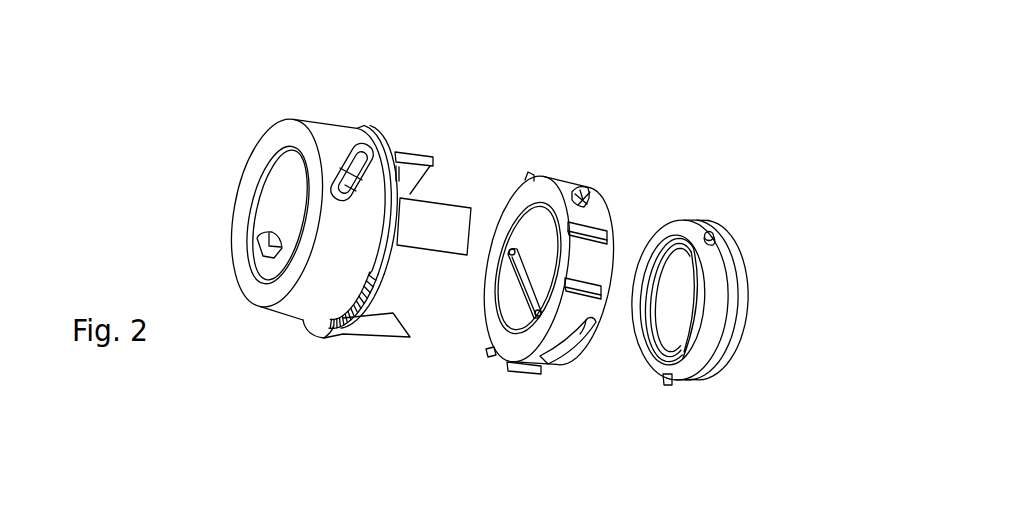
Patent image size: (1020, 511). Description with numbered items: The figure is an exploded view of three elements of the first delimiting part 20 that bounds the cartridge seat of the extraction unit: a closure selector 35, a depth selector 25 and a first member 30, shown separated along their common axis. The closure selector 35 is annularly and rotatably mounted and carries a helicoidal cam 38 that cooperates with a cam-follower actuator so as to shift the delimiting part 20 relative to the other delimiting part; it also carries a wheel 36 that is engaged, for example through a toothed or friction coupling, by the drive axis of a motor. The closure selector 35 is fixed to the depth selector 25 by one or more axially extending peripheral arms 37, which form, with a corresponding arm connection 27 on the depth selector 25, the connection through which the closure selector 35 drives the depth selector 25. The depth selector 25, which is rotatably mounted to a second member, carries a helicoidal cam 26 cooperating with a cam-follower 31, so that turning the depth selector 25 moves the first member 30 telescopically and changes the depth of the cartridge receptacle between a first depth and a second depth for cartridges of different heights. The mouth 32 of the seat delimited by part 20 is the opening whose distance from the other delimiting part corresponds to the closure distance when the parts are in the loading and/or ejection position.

The first delimiting part 20 is at (753, 388).
The depth selector 25 is at (535, 242).
The helicoidal cam 26 is at (580, 337).
The arm connection 27 is at (599, 284).
The first member 30 is at (722, 260).
The cam-follower 31 is at (707, 231).
The mouth 32 is at (749, 289).
The closure selector 35 is at (344, 190).
The wheel 36 is at (380, 291).
The axially extending peripheral arms 37 is at (455, 212).
The helicoidal cam 38 is at (348, 152).